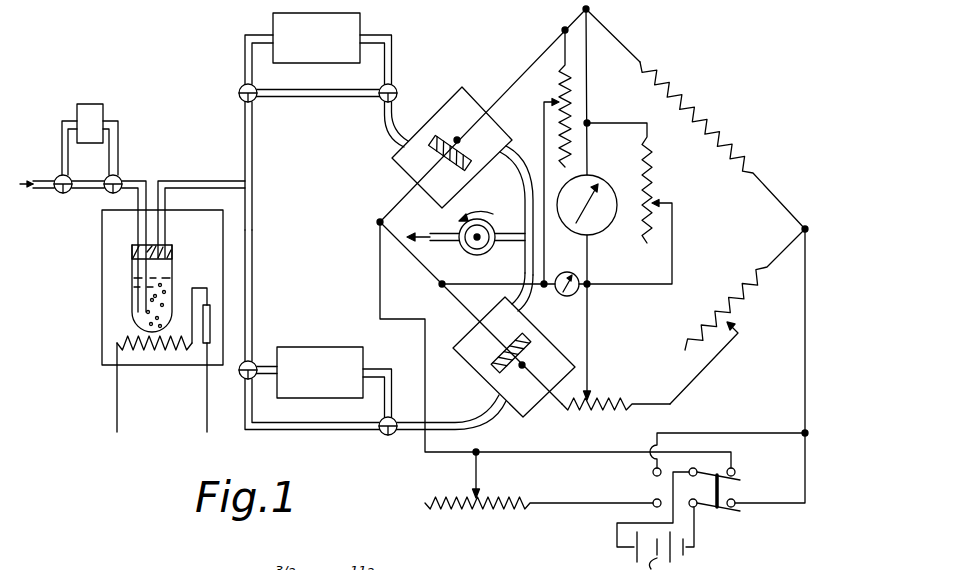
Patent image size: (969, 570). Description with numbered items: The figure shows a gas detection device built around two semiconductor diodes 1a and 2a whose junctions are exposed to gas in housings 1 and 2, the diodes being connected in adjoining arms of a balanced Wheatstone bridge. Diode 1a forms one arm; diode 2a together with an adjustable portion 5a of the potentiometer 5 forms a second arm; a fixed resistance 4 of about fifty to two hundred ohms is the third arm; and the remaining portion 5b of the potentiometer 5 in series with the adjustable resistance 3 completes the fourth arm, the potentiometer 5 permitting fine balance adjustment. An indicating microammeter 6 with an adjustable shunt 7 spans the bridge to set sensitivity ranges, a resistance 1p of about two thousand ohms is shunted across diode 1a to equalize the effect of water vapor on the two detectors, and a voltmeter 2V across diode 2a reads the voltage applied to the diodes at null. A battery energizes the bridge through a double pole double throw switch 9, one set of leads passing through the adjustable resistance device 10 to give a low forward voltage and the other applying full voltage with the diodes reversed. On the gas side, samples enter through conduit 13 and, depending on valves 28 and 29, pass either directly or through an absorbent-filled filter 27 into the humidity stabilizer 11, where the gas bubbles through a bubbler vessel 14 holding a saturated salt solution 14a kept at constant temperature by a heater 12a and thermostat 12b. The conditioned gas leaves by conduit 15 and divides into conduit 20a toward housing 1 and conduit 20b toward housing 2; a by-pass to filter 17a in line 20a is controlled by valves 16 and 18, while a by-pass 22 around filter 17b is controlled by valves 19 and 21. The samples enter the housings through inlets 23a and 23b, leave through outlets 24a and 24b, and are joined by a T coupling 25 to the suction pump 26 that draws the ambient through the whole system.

The housing 1 is at (463, 95).
The semiconductor type diode 1a is at (436, 145).
The resistance 1p is at (572, 93).
The housing 2 is at (532, 410).
The semiconductor type diode 2a is at (536, 343).
The voltmeter 2V is at (556, 274).
The adjustable resistance 3 is at (724, 304).
The fixed resistance 4 is at (691, 111).
The potentiometer 5 is at (591, 388).
The adjustable portion of the resistance of the potentiometer 5a is at (578, 408).
The remaining portion of the resistance of the potentiometer 5b is at (620, 400).
The indicating microammeter 6 is at (598, 180).
The adjustable shunt 7 is at (652, 172).
The double pole double throw switch 9 is at (695, 470).
The adjustable resistance device 10 is at (496, 502).
The humidity stabilizer 11 is at (101, 264).
The heater 12a is at (150, 352).
The thermostat 12b is at (209, 352).
The conduit 13 is at (45, 178).
The bubbler vessel 14 is at (172, 264).
The saturated salt solution 14a is at (165, 297).
The conduit 15 is at (219, 180).
The valve 16 is at (240, 88).
The filter 17a is at (362, 16).
The filter 17b is at (322, 347).
The valve 18 is at (396, 89).
The valve 19 is at (256, 362).
The conduit 20a is at (255, 131).
The conduit 20b is at (254, 263).
The valve 21 is at (380, 433).
The by-pass 22 is at (285, 432).
The inlet 23a is at (381, 125).
The inlet 23b is at (502, 420).
The outlet 24a is at (519, 178).
The outlet 24b is at (522, 311).
The T coupling 25 is at (525, 233).
The suction pump 26 is at (477, 227).
The filter 27 is at (104, 108).
The valve 28 is at (66, 193).
The valve 29 is at (122, 180).